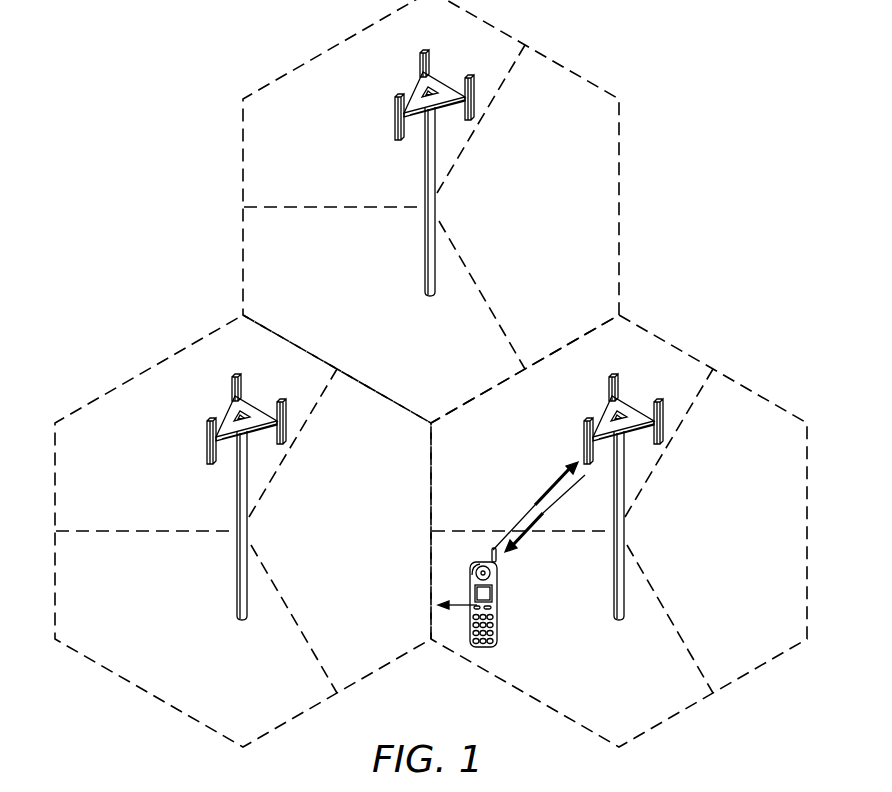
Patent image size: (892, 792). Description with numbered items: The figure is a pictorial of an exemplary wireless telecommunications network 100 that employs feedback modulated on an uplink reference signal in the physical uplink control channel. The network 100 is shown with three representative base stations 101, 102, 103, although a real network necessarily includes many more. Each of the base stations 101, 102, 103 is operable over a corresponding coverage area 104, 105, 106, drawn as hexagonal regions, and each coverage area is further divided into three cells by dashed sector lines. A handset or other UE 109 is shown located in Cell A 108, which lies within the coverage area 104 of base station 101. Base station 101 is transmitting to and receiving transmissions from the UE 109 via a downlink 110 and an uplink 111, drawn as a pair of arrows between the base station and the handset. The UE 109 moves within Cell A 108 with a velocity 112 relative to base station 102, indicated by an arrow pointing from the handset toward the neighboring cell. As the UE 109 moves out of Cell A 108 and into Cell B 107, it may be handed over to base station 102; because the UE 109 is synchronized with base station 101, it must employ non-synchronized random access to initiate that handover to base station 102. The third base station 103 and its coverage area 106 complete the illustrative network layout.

The wireless telecommunications network 100 is at (687, 62).
The base station 101 is at (625, 538).
The base station 102 is at (236, 503).
The base station 103 is at (423, 181).
The coverage area 104 is at (748, 674).
The coverage area 105 is at (150, 694).
The coverage area 106 is at (620, 207).
The Cell B 107 is at (386, 639).
The Cell A 108 is at (624, 704).
The UE 109 is at (498, 610).
The downlink 110 is at (540, 518).
The uplink 111 is at (548, 489).
The velocity 112 is at (461, 608).